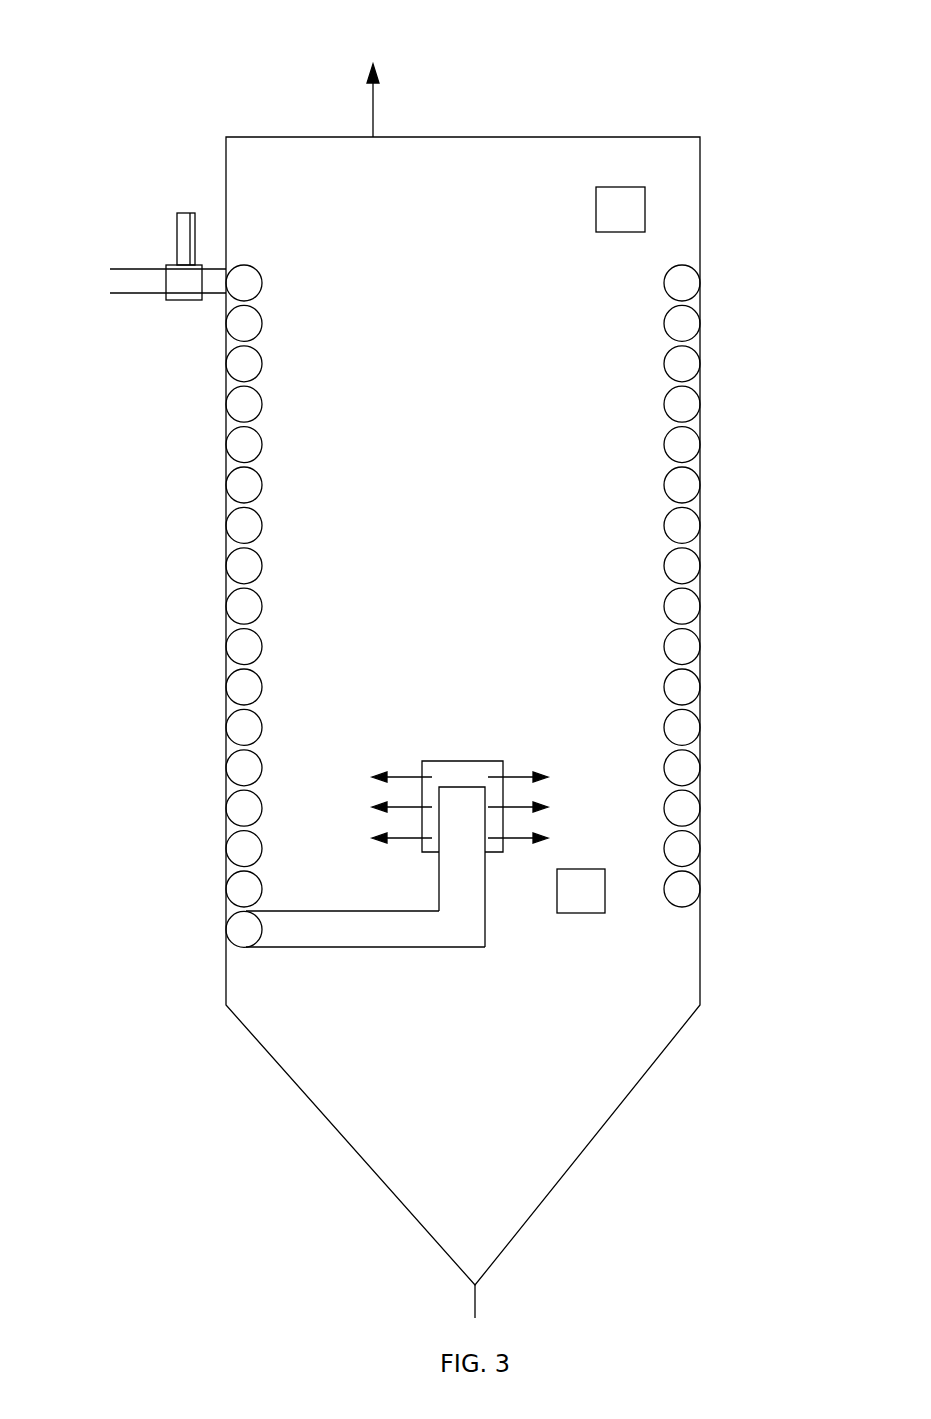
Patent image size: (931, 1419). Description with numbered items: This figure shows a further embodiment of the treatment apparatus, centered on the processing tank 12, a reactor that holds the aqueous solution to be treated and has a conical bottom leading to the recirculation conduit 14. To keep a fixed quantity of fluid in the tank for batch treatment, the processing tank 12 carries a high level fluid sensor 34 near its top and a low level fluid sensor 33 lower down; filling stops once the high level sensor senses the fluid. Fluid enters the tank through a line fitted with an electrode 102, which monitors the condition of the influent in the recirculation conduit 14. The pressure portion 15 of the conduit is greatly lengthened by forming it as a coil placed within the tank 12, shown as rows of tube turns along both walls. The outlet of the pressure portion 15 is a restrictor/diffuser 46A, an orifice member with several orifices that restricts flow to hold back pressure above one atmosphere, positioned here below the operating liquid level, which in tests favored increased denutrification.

The processing tank 12 is at (703, 426).
The recirculation conduit 14 is at (478, 1301).
The pressure portion 15 is at (147, 268).
The electrode 102 is at (180, 300).
The high level fluid sensor 34 is at (645, 204).
The low level fluid sensor 33 is at (605, 890).
The restrictor/diffuser 46A is at (470, 761).